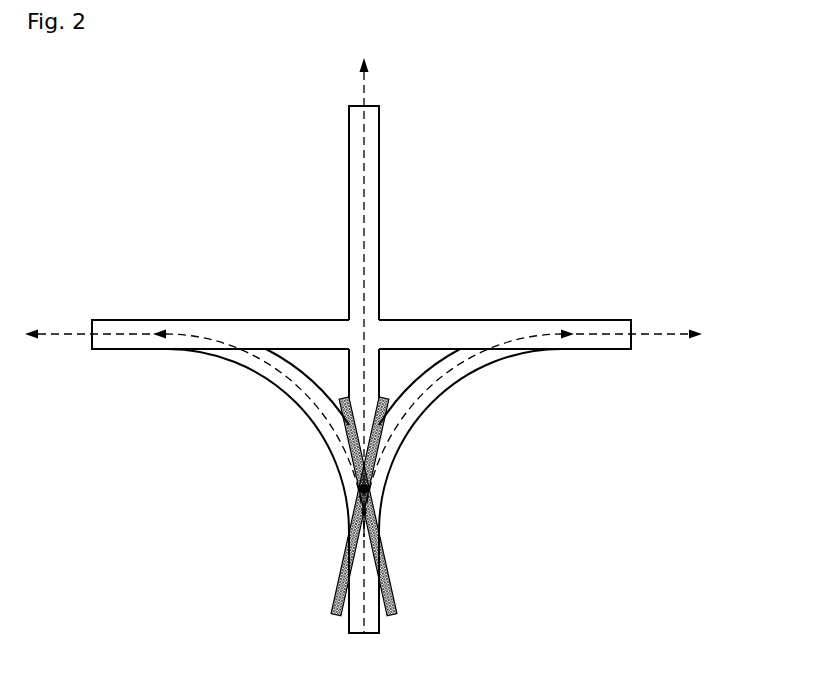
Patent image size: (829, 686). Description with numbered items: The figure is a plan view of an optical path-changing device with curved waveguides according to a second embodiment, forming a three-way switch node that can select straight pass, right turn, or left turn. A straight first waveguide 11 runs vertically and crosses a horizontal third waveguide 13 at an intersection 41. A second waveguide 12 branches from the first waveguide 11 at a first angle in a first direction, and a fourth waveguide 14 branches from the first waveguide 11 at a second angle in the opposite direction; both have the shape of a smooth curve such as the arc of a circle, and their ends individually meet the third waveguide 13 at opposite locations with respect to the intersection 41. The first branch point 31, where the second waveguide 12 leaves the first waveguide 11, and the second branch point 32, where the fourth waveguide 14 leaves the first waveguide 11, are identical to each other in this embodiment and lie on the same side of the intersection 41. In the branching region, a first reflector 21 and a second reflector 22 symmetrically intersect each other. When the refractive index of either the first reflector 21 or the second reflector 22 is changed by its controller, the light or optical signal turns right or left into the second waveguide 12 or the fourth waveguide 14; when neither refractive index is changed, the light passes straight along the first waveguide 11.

The first waveguide 11 is at (357, 196).
The second waveguide 12 is at (458, 378).
The third waveguide 13 is at (191, 326).
The fourth waveguide 14 is at (273, 388).
The first reflector 21 is at (352, 547).
The second reflector 22 is at (383, 547).
The first branch point 31 is at (419, 488).
The second branch point 32 is at (372, 505).
The intersection 41 is at (368, 333).